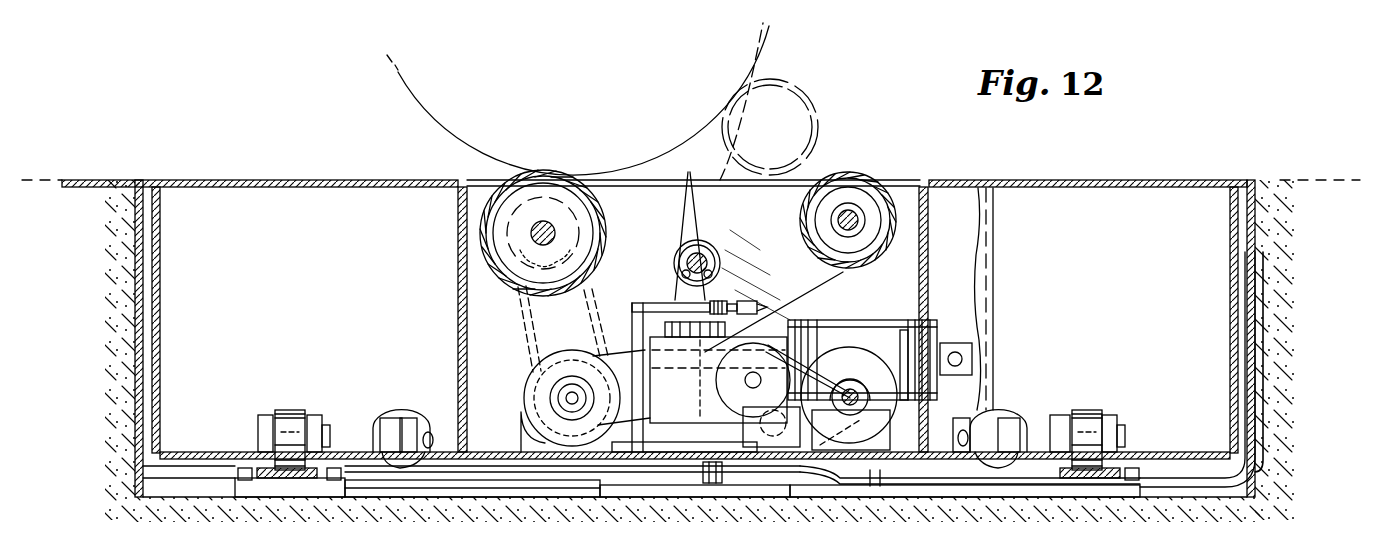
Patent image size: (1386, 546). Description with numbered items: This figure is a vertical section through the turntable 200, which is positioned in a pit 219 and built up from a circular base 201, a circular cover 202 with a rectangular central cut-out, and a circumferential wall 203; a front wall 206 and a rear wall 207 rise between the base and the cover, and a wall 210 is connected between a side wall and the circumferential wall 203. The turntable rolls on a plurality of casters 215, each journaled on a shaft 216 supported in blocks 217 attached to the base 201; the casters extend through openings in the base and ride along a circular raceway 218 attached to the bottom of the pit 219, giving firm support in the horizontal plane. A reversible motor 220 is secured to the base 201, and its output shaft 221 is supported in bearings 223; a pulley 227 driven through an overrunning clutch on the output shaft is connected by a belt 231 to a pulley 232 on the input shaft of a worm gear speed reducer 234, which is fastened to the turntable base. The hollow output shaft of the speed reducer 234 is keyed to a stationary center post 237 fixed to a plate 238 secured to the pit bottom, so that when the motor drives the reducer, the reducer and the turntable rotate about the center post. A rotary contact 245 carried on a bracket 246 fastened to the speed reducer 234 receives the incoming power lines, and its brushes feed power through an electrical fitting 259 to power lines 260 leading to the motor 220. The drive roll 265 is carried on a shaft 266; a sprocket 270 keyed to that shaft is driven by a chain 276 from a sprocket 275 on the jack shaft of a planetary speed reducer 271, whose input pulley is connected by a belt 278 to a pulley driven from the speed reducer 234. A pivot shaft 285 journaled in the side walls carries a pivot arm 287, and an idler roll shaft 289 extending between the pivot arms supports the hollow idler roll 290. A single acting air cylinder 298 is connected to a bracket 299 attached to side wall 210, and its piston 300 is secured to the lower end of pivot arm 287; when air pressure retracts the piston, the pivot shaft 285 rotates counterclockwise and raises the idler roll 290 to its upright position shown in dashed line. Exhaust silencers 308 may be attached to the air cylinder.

The turntable 200 is at (662, 284).
The circular base 201 is at (183, 452).
The circular cover 202 is at (285, 180).
The circumferential wall 203 is at (160, 296).
The front wall 206 is at (458, 302).
The rear wall 207 is at (926, 215).
The wall 210 is at (995, 260).
The casters 215 is at (290, 410).
The shafts 216 is at (258, 440).
The blocks 217 is at (265, 415).
The circular raceway 218 is at (430, 480).
The pit 219 is at (195, 497).
The reversible DC motor 220 is at (862, 360).
The output shaft 221 is at (860, 388).
The bearing 223 is at (905, 480).
The pulley 227 is at (854, 369).
The belt 231 is at (823, 415).
The pulley 232 is at (783, 395).
The worm gear speed reducer 234 is at (718, 372).
The stationary center post 237 is at (712, 483).
The plate 238 is at (613, 497).
The rotary contact 245 is at (655, 303).
The bracket 246 is at (634, 303).
The electrical fitting 259 is at (758, 338).
The power lines 260 is at (773, 312).
The drive roll 265 is at (511, 209).
The shaft 266 is at (543, 233).
The sprocket 270 is at (510, 258).
The planetary speed reducer 271 is at (523, 430).
The sprocket 275 is at (540, 374).
The chain 276 is at (526, 322).
The belt 278 is at (594, 326).
The pivot shaft 285 is at (697, 253).
The pivot arm 287 is at (716, 182).
The idler roll shaft 289 is at (852, 218).
The hollow idler roll 290 is at (871, 193).
The air cylinder 298 is at (905, 330).
The bracket 299 is at (958, 343).
The piston 300 is at (684, 424).
The exhaust silencers 308 is at (928, 250).